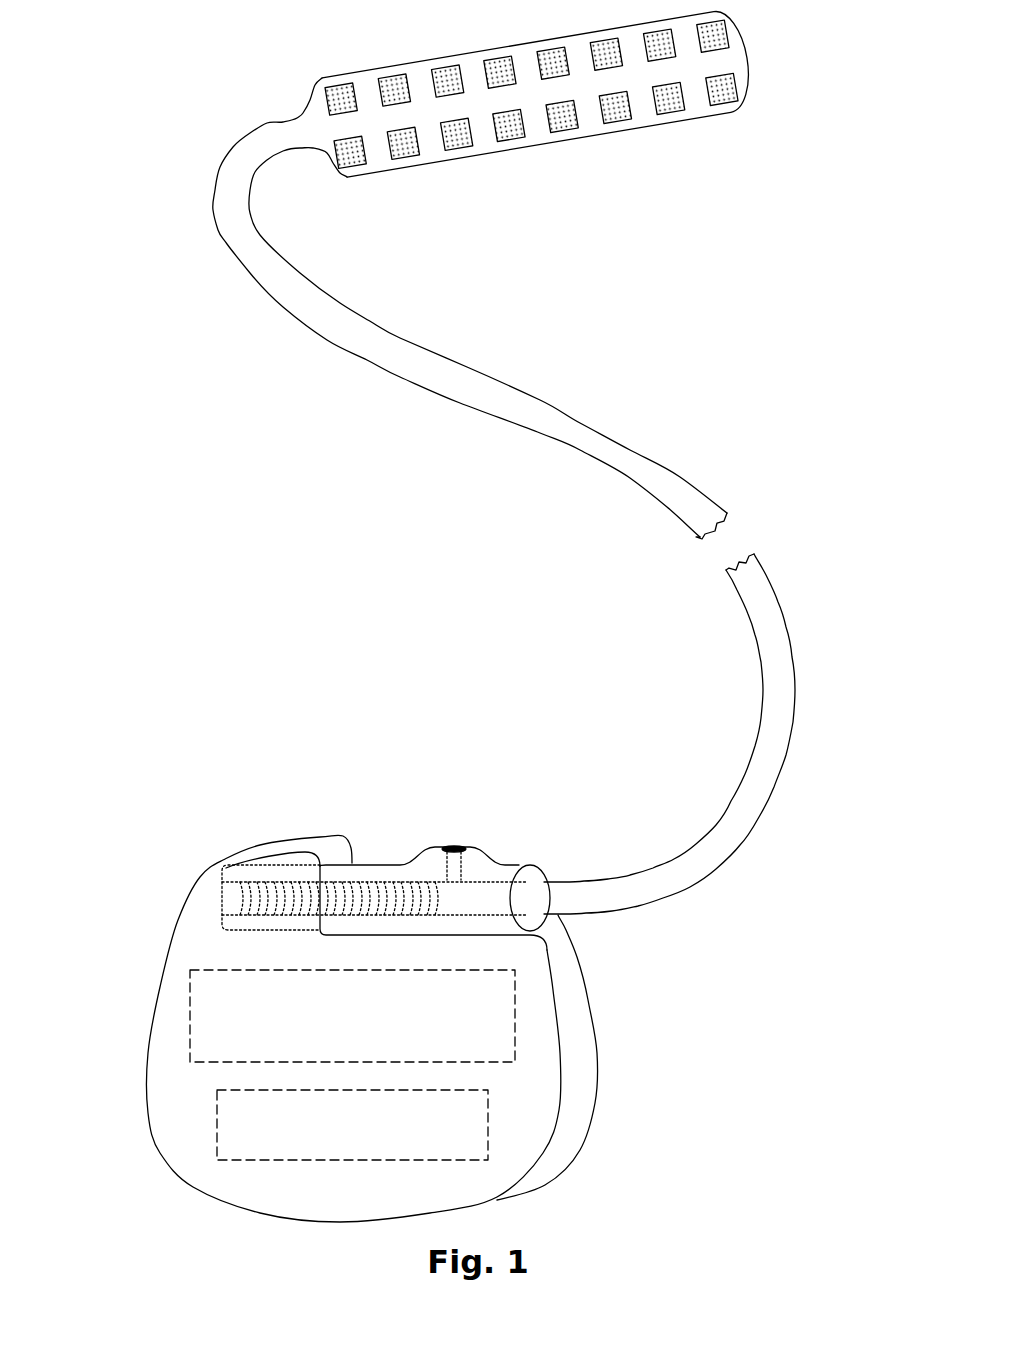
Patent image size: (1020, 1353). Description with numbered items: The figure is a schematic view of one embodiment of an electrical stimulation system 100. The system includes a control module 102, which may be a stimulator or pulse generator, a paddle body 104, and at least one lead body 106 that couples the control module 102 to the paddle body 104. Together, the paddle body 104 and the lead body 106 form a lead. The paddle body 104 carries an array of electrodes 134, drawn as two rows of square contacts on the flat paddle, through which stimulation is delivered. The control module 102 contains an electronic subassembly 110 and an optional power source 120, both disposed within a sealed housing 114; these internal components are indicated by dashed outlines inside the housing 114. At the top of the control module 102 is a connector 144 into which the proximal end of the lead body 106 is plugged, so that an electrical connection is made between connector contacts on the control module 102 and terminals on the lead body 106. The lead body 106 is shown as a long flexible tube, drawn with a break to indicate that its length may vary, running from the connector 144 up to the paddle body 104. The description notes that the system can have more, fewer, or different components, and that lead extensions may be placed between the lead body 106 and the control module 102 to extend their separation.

The electrical stimulation system 100 is at (676, 381).
The control module 102 is at (194, 840).
The paddle body 104 is at (572, 130).
The lead body 106 is at (530, 395).
The electronic subassembly 110 is at (203, 1008).
The sealed housing 114 is at (203, 947).
The power source 120 is at (223, 1120).
The array of electrodes 134 is at (540, 135).
The connector 144 is at (390, 862).